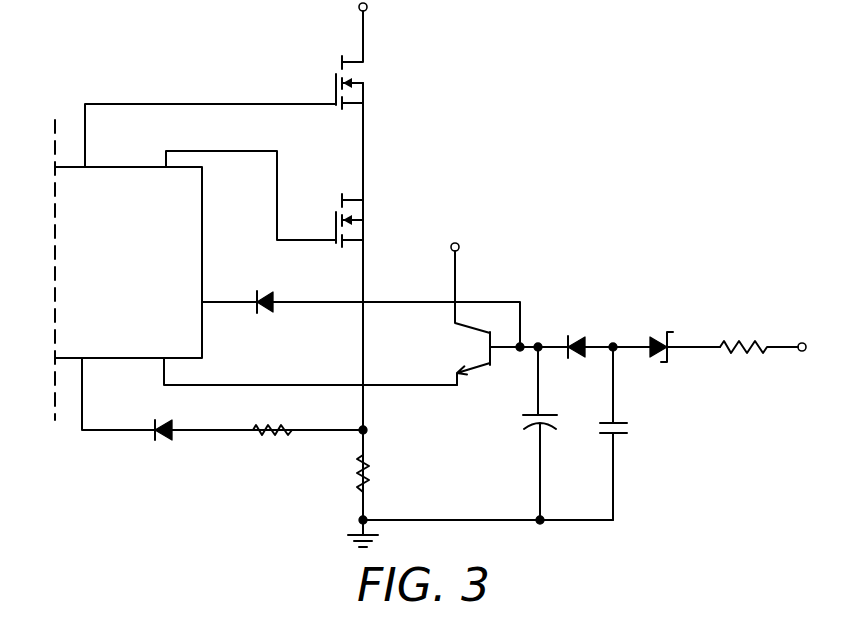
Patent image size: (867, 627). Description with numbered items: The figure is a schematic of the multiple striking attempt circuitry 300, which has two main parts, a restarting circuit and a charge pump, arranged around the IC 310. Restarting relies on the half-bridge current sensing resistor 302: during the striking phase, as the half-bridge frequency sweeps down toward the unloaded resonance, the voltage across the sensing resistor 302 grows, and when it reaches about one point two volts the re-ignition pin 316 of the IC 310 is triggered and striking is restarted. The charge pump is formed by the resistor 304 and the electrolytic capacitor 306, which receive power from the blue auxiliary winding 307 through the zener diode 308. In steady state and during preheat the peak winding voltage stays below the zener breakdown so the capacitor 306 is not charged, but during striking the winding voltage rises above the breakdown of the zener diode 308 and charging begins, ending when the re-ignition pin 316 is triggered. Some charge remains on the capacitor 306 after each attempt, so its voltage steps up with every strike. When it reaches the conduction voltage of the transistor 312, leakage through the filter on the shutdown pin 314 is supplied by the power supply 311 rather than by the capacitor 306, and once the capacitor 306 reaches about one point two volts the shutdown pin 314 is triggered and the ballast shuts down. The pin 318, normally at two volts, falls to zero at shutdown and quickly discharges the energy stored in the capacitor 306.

The multiple striking attempt circuitry 300 is at (663, 474).
The half-bridge current sensing resistor 302 is at (357, 468).
The resistor 304 is at (745, 357).
The electrolytic capacitor 306 is at (530, 427).
The blue auxiliary winding 307 is at (802, 343).
The zener diode 308 is at (655, 340).
The IC 310 is at (202, 256).
The power supply 311 is at (459, 247).
The transistor 312 is at (492, 337).
The shutdown pin 314 is at (220, 385).
The re-ignition pin 316 is at (103, 432).
The pin 318 is at (296, 302).